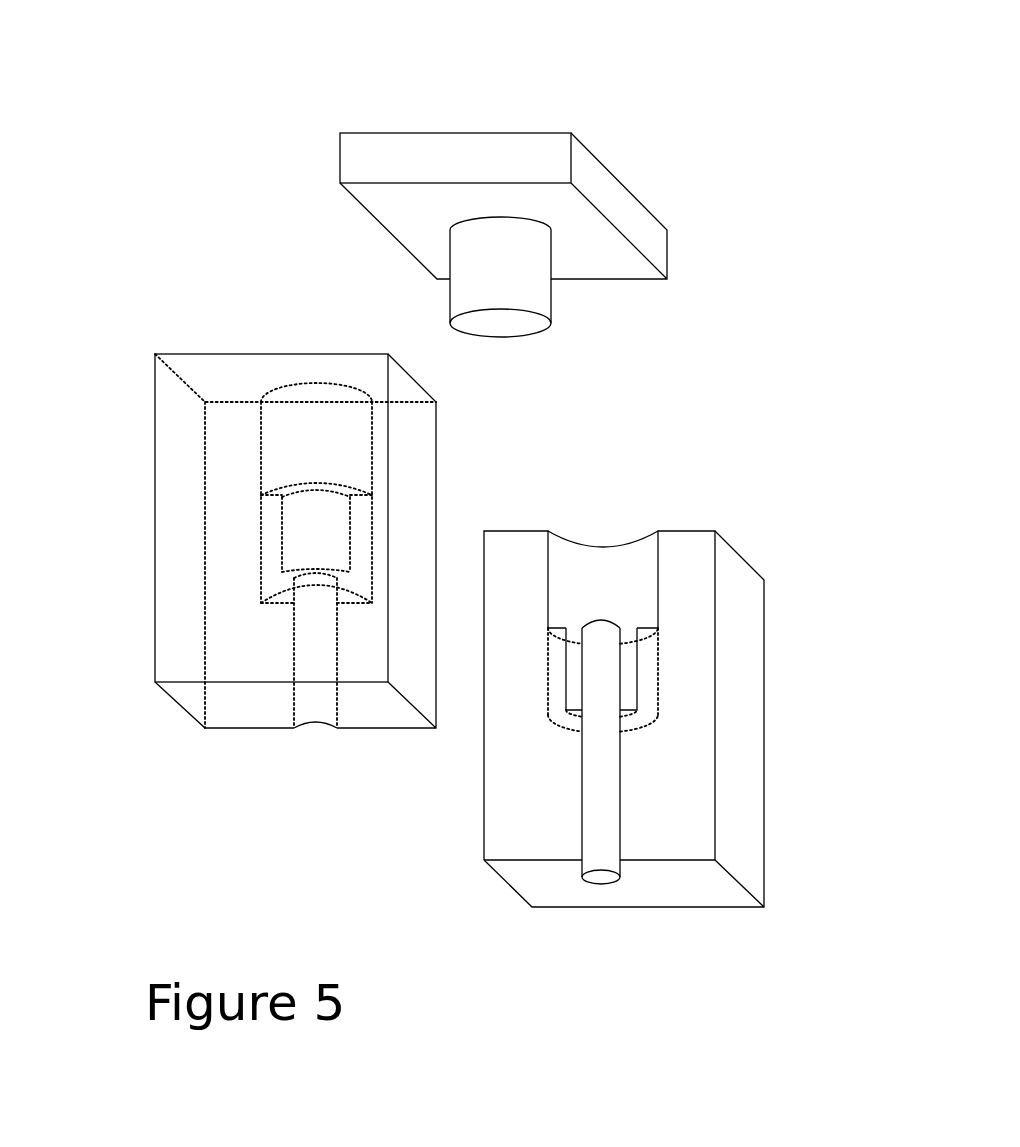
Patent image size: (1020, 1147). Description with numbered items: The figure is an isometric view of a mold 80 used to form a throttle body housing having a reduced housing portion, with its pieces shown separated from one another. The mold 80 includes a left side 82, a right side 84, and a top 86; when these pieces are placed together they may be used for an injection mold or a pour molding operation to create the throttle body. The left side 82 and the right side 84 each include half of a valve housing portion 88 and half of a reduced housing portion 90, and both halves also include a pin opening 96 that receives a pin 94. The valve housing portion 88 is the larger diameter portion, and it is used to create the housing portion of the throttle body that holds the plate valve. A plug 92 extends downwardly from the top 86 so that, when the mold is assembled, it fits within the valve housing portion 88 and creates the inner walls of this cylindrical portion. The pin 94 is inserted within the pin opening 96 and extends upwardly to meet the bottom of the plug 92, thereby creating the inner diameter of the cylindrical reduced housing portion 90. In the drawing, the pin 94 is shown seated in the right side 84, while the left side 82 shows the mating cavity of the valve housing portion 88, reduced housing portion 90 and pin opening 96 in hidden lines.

The mold 80 is at (150, 120).
The left side 82 is at (180, 637).
The right side 84 is at (733, 817).
The top 86 is at (515, 160).
The valve housing portion 88 is at (612, 588).
The reduced housing portion 90 is at (637, 678).
The plug 92 is at (527, 285).
The pin 94 is at (608, 880).
The pin opening 96 is at (313, 723).